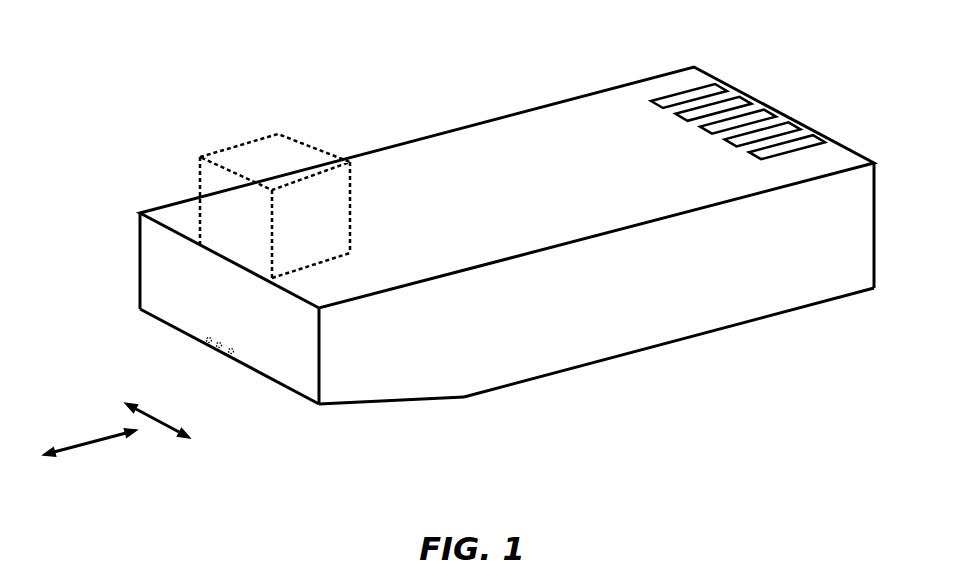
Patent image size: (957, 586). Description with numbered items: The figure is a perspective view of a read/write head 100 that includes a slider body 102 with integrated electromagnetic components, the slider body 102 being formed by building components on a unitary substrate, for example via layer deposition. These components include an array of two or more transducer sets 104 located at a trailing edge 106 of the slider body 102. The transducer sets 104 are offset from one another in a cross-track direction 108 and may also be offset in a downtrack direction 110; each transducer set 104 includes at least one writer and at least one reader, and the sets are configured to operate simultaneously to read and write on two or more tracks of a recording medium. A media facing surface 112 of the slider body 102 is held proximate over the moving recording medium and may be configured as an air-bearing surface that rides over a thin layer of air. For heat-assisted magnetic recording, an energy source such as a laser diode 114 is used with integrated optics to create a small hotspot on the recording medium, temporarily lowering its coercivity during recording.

The read/write head 100 is at (377, 70).
The slider body 102 is at (450, 140).
The transducer sets 104 is at (209, 344).
The trailing edge 106 is at (140, 286).
The cross-track direction 108 is at (160, 430).
The downtrack direction 110 is at (73, 448).
The media facing surface 112 is at (307, 403).
The laser diode 114 is at (245, 142).